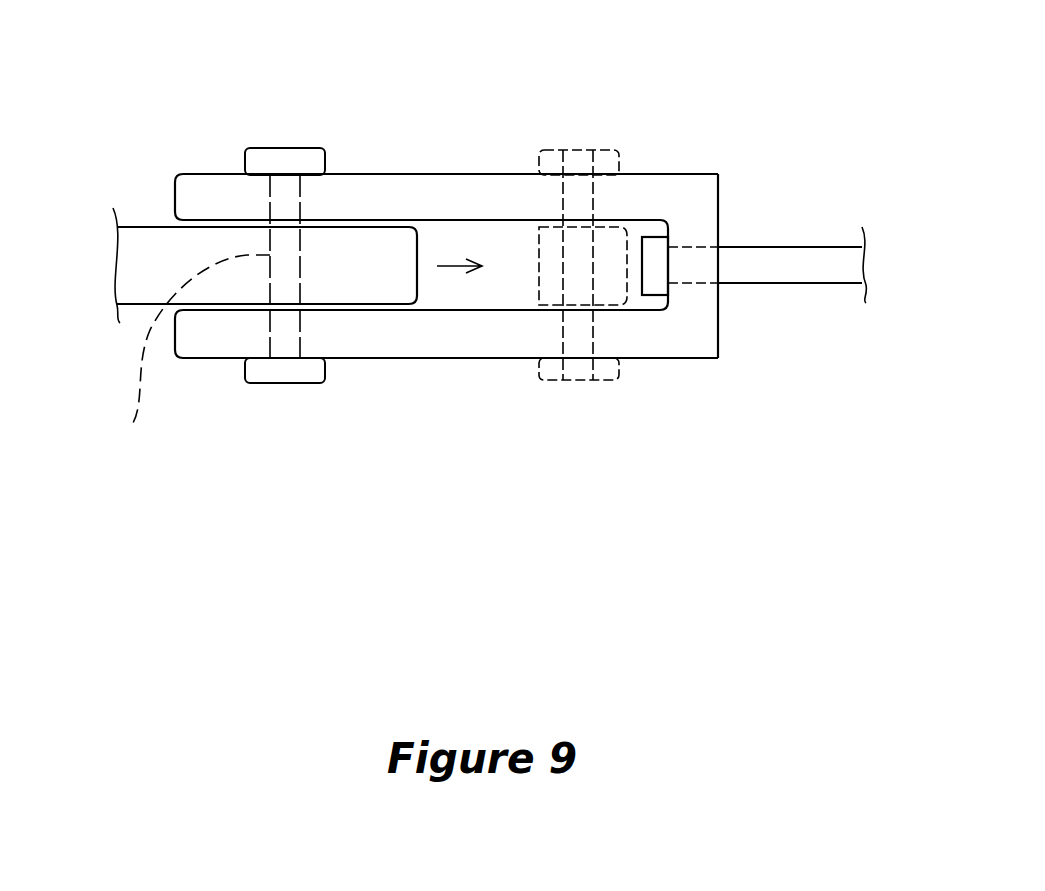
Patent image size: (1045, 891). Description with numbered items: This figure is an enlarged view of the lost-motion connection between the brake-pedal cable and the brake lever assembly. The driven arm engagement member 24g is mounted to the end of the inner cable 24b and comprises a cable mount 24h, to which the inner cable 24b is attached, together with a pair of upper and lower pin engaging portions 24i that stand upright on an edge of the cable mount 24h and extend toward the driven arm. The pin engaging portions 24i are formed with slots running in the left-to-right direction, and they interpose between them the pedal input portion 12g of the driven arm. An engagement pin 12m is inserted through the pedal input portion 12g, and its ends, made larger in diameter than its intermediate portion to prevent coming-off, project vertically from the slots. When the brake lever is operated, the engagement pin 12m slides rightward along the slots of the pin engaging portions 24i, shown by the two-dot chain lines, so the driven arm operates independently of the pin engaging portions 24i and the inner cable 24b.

The pedal input portion 12g is at (383, 253).
The engagement pin 12m is at (133, 423).
The cable mount 24h is at (703, 225).
The pin engaging portions 24i is at (417, 343).
The driven arm engagement member 24g is at (505, 360).
The inner cable 24b is at (803, 283).